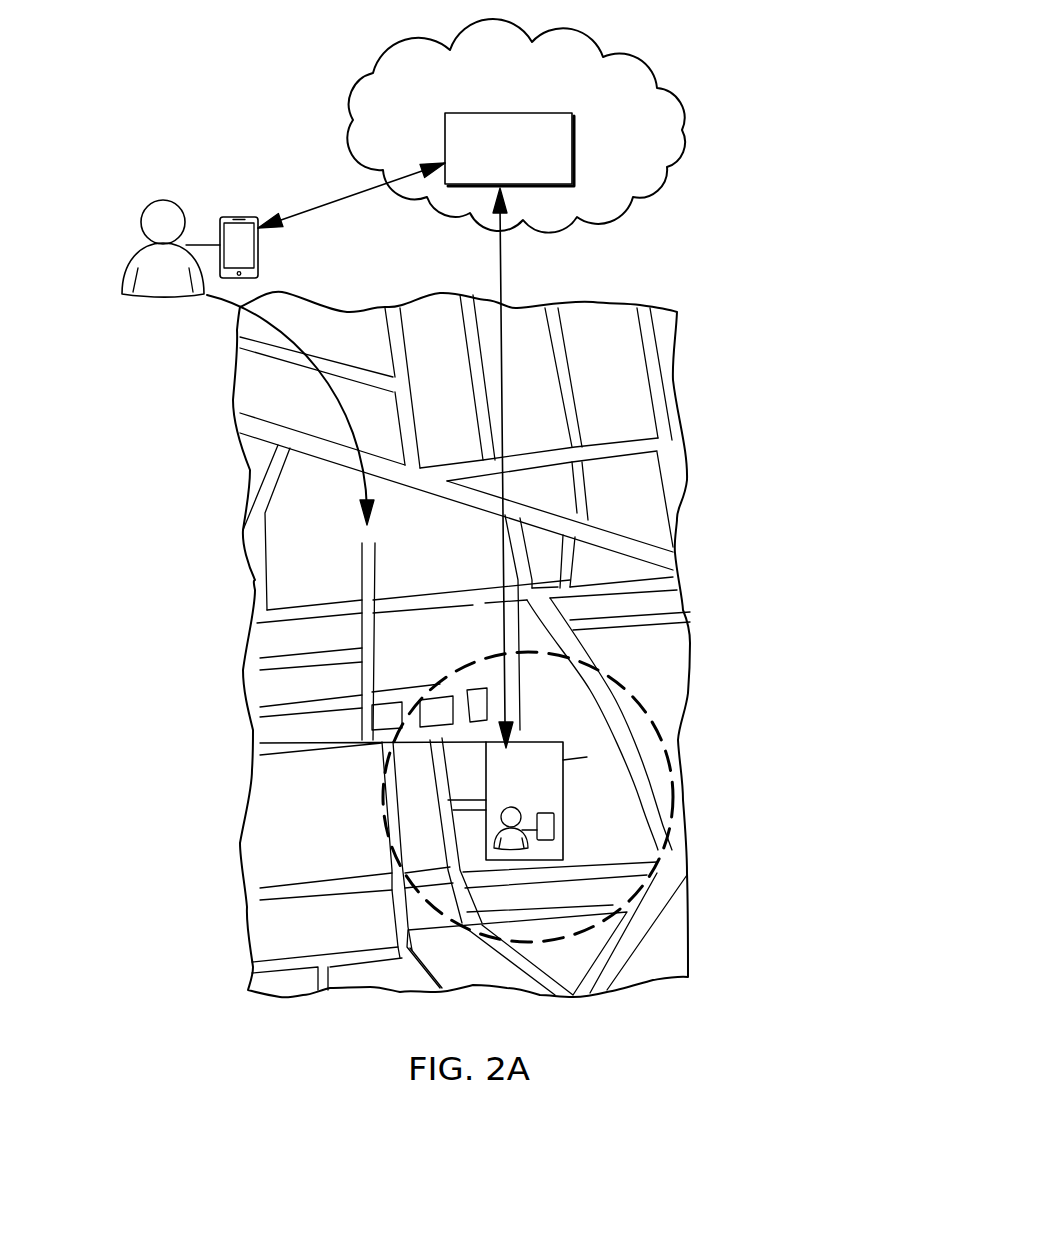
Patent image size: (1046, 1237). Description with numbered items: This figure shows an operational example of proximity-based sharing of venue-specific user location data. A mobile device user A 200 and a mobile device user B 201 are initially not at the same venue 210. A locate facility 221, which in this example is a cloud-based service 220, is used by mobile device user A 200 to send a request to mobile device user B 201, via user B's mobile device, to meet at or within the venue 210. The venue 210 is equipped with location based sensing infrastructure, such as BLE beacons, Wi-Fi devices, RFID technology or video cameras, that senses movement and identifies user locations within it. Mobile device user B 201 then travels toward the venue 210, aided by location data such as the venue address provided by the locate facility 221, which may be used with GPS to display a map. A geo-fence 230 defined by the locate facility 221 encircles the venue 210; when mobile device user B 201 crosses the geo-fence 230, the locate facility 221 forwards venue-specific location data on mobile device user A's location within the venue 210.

The mobile device user A 200 is at (527, 843).
The mobile device user B 201 is at (137, 250).
The venue 210 is at (587, 757).
The cloud-based service 220 is at (580, 33).
The locate facility 221 is at (580, 143).
The geo-fence 230 is at (613, 677).